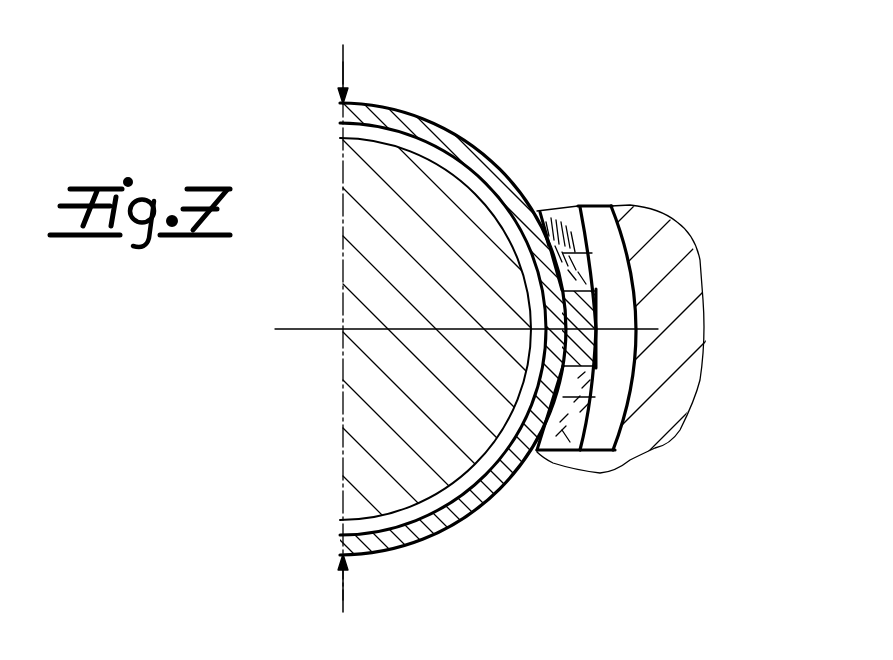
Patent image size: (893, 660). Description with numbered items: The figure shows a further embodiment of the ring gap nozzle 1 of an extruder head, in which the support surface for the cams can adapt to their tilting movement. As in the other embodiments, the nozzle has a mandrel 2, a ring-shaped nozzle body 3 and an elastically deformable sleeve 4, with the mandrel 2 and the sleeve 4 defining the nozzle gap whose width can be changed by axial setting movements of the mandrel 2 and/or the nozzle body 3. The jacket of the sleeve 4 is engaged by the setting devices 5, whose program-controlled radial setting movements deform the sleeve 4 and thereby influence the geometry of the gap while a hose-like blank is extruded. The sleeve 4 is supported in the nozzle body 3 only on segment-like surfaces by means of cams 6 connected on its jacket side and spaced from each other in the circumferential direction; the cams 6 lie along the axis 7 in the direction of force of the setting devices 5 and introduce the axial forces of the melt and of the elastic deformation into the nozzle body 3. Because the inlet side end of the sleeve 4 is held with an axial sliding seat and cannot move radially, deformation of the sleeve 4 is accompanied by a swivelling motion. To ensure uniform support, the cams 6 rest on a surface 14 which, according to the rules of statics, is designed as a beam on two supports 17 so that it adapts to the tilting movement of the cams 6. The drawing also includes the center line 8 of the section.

The ring gap nozzle 1 is at (776, 97).
The mandrel 2 is at (430, 376).
The nozzle body 3 is at (647, 315).
The sleeve 4 is at (440, 341).
The setting devices 5 is at (312, 339).
The cams 6 is at (673, 321).
The axis 7 is at (309, 331).
The center line 8 is at (465, 301).
The support surface 14 is at (687, 328).
The supports 17 is at (576, 337).